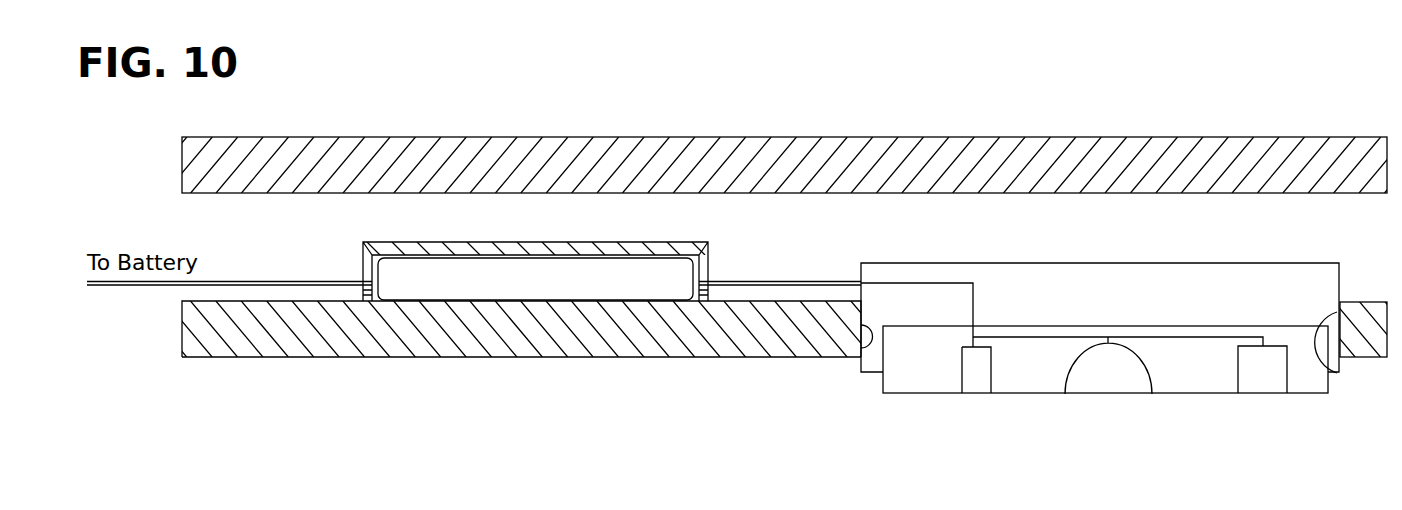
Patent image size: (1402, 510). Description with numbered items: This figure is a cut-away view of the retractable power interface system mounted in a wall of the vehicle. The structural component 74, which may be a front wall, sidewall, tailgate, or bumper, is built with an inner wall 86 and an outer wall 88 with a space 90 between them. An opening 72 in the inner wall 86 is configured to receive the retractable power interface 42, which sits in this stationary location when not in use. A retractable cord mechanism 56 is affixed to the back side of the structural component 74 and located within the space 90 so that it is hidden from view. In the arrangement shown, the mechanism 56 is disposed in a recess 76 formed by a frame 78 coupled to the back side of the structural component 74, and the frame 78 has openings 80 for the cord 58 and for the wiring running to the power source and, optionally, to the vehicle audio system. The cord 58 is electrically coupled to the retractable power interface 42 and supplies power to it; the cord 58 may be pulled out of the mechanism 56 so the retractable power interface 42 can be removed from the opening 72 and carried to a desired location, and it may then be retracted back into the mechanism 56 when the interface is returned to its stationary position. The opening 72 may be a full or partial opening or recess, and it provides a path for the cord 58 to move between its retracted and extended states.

The retractable power interface 42 is at (1325, 280).
The retractable cord mechanism 56 is at (413, 292).
The cord 58 is at (793, 280).
The opening 72 is at (865, 346).
The structural component 74 is at (580, 345).
The recess 76 is at (697, 245).
The frame 78 is at (482, 250).
The openings 80 is at (363, 281).
The inner wall 86 is at (712, 358).
The outer wall 88 is at (858, 142).
The space 90 is at (652, 222).